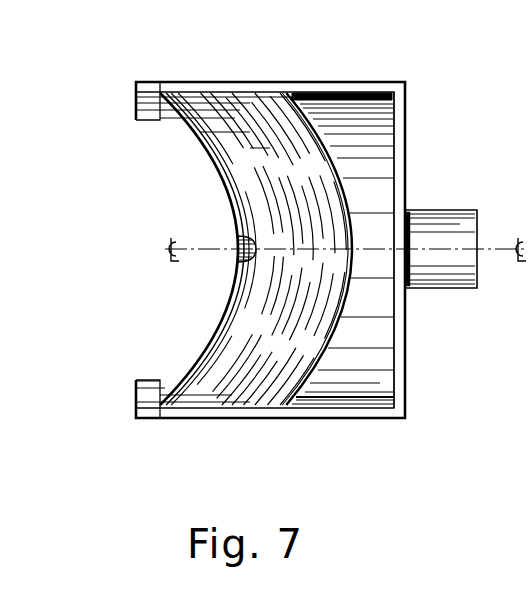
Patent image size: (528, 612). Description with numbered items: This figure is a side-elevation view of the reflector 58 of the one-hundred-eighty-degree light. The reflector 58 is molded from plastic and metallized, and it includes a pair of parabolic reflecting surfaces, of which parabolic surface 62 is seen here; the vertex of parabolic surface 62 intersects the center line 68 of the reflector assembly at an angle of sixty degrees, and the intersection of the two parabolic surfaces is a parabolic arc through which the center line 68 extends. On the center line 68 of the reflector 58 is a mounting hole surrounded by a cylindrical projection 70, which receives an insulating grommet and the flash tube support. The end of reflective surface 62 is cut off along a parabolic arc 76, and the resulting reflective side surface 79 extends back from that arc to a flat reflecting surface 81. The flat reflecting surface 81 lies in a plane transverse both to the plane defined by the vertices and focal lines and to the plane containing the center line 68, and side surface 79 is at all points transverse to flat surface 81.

The reflector 58 is at (198, 425).
The parabolic surface 62 is at (292, 317).
The center line 68 is at (483, 249).
The cylindrical projection 70 is at (238, 258).
The parabolic arc 76 is at (300, 118).
The reflective side surface 79 is at (380, 147).
The flat reflecting surface 81 is at (389, 303).